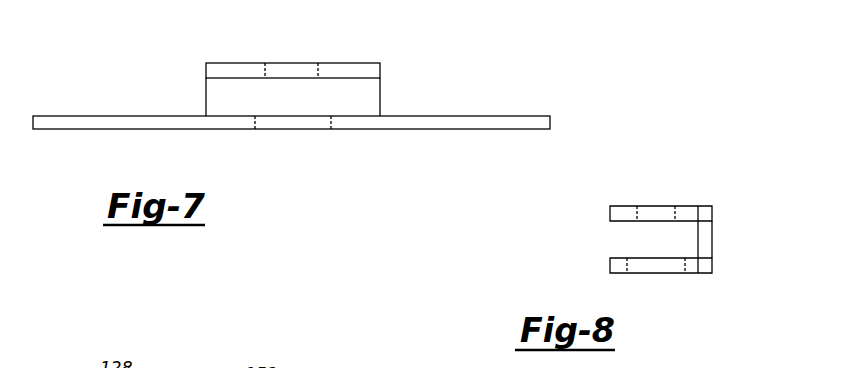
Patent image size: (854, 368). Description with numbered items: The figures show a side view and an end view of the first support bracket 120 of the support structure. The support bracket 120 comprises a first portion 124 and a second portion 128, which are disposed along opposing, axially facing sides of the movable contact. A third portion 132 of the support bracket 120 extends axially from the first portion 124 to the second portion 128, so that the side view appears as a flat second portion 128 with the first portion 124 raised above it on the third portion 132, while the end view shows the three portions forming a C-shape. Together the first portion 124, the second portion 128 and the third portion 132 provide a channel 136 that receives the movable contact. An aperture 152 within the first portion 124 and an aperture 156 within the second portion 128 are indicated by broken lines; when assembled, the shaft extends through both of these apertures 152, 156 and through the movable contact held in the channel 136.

In FIG. 7, the support bracket 120 is at (497, 47).
In FIG. 8, the support bracket 120 is at (722, 183).
In FIG. 7, the first portion 124 is at (352, 70).
In FIG. 8, the first portion 124 is at (620, 213).
In FIG. 7, the second portion 128 is at (460, 122).
In FIG. 7, the third portion 132 is at (218, 100).
In FIG. 8, the third portion 132 is at (707, 240).
In FIG. 8, the channel 136 is at (632, 240).
In FIG. 7, the aperture 152 is at (273, 72).
In FIG. 8, the aperture 152 is at (643, 217).
In FIG. 7, the aperture 156 is at (318, 123).
In FIG. 8, the aperture 156 is at (627, 265).